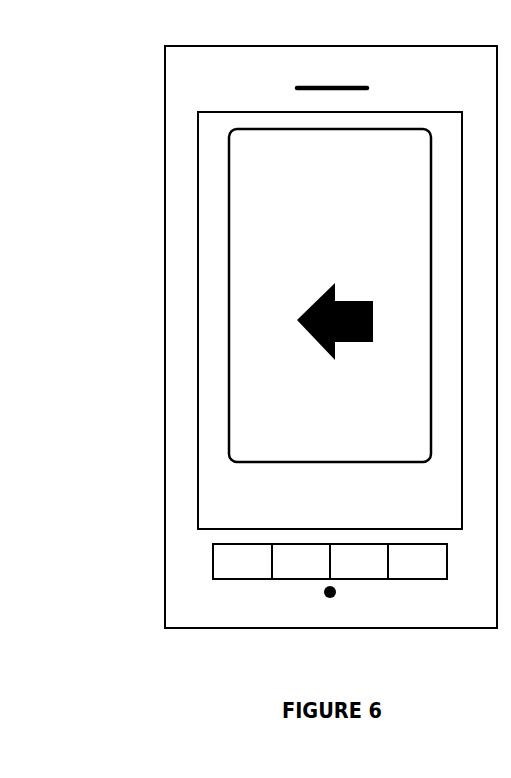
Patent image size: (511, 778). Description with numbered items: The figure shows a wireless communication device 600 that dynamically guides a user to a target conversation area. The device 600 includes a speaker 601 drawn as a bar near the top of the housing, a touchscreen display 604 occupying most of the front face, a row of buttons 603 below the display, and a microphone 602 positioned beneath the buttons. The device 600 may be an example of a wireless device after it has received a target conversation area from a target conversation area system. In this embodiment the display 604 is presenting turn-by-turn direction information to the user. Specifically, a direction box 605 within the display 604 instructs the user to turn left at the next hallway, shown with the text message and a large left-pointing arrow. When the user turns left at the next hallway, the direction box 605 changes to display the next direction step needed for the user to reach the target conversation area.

The wireless communication device 600 is at (103, 95).
The speaker 601 is at (367, 87).
The microphone 602 is at (336, 591).
The buttons 603 is at (448, 571).
The touchscreen display 604 is at (427, 111).
The direction box 605 is at (267, 463).